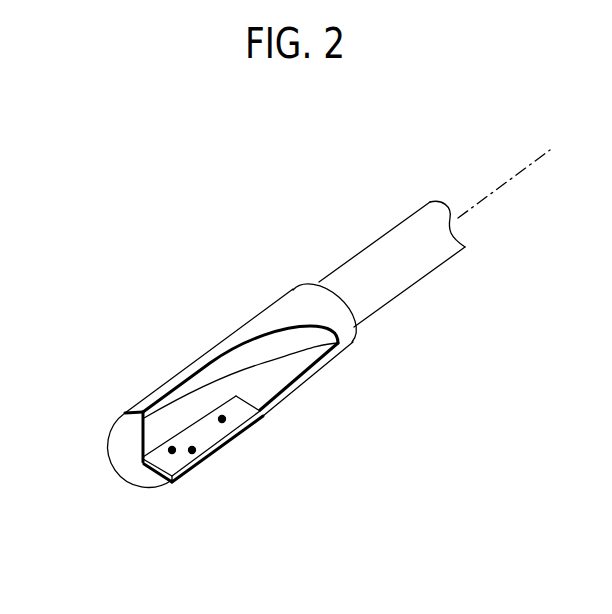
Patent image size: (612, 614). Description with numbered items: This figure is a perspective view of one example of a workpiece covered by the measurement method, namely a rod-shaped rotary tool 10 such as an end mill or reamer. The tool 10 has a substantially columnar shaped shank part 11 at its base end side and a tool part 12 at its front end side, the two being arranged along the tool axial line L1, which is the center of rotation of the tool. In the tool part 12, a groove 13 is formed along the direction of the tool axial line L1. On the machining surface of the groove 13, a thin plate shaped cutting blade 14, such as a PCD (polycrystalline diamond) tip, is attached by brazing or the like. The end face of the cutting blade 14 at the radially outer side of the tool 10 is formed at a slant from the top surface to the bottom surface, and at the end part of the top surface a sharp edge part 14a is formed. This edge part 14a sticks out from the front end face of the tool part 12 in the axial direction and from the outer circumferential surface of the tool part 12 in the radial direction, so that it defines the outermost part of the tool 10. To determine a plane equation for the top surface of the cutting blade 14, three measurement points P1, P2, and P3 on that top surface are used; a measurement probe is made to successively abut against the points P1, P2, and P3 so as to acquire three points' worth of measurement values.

The rod-shaped rotary tool 10 is at (205, 297).
The shank part 11 is at (443, 262).
The tool part 12 is at (137, 486).
The groove 13 is at (273, 376).
The cutting blade 14 is at (198, 437).
The edge part 14a is at (200, 474).
The measurement point P1 is at (172, 450).
The measurement point P2 is at (192, 450).
The measurement point P3 is at (222, 419).
The tool axial line L1 is at (503, 182).